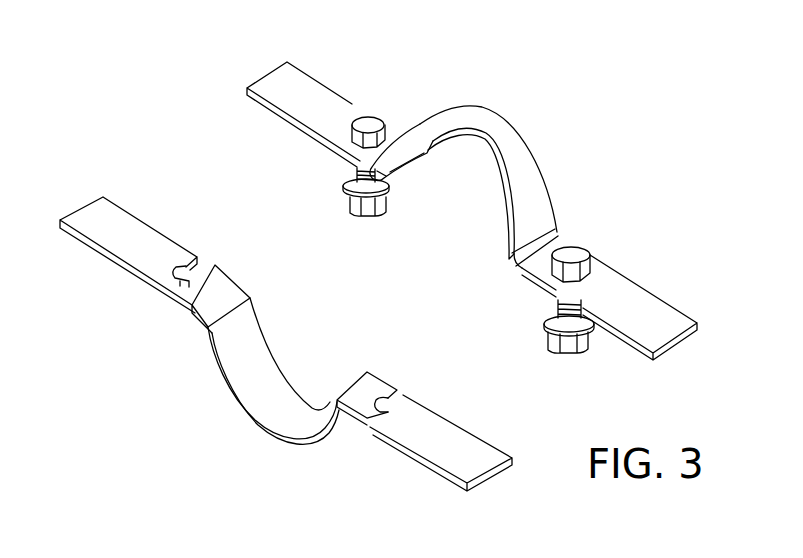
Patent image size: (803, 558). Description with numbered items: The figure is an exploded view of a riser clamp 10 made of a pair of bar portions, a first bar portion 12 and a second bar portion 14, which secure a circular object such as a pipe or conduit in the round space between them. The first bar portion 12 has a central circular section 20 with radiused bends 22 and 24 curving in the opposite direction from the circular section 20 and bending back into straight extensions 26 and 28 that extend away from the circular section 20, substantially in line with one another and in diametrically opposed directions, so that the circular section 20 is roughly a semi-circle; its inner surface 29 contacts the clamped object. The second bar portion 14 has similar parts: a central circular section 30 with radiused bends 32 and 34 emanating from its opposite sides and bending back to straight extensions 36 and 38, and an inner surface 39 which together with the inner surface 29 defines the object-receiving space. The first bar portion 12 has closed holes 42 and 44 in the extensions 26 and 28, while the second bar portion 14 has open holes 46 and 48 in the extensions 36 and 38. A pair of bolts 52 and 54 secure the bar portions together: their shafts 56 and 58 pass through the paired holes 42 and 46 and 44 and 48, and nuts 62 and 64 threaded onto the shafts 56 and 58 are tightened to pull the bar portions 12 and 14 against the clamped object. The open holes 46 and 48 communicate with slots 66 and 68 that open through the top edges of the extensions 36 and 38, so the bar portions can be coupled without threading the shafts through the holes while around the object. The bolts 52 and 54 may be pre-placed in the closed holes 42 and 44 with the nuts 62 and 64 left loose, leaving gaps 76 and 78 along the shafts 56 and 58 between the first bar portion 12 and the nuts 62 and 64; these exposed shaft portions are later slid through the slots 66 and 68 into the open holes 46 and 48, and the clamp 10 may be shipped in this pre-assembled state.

The clamp 10 is at (150, 92).
The first bar portion 12 is at (258, 44).
The second bar portion 14 is at (58, 197).
The central circular section 20 is at (485, 123).
The radiused bend 22 is at (400, 130).
The radiused bend 24 is at (555, 240).
The straight extension 26 is at (298, 82).
The straight extension 28 is at (653, 297).
The inner surface 29 is at (412, 153).
The central circular section 30 is at (252, 427).
The radiused bend 32 is at (372, 401).
The radiused bend 34 is at (265, 369).
The straight extension 36 is at (473, 450).
The straight extension 38 is at (127, 228).
The inner surface 39 is at (270, 382).
The closed hole 42 is at (353, 112).
The closed hole 44 is at (580, 266).
The open hole 46 is at (387, 415).
The open hole 48 is at (183, 278).
The bolt 52 is at (373, 120).
The bolt 54 is at (570, 255).
The bolt shaft 56 is at (343, 182).
The bolt shaft 58 is at (553, 320).
The nut 62 is at (360, 217).
The nut 64 is at (575, 352).
The slot 66 is at (425, 387).
The slot 68 is at (210, 256).
The gap 76 is at (343, 169).
The gap 78 is at (540, 306).